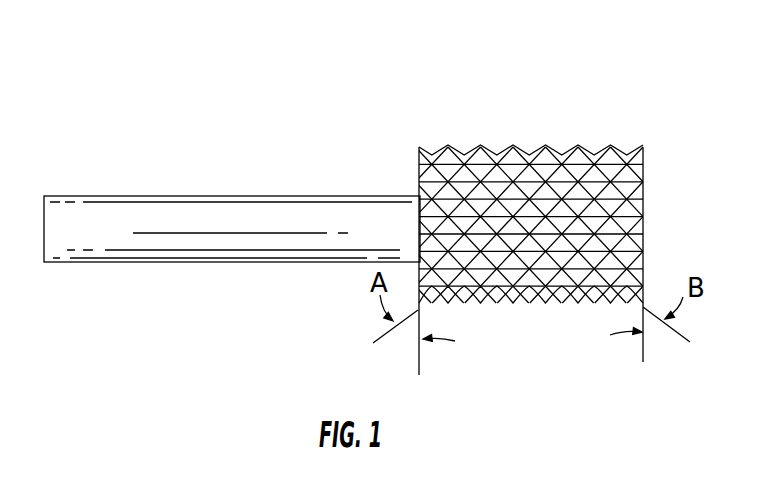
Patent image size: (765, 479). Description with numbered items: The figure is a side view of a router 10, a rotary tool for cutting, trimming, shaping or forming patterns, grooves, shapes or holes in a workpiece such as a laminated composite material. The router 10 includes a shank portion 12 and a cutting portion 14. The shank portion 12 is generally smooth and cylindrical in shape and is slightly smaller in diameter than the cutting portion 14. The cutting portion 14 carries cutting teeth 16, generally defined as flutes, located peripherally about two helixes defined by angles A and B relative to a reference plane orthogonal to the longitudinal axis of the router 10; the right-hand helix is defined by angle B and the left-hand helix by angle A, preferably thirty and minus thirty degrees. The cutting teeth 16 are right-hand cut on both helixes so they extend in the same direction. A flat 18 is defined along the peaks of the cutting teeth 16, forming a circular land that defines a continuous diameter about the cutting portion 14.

The router 10 is at (170, 128).
The shank portion 12 is at (167, 264).
The cutting portion 14 is at (526, 226).
The cutting teeth 16 is at (513, 313).
The flat 18 is at (480, 148).